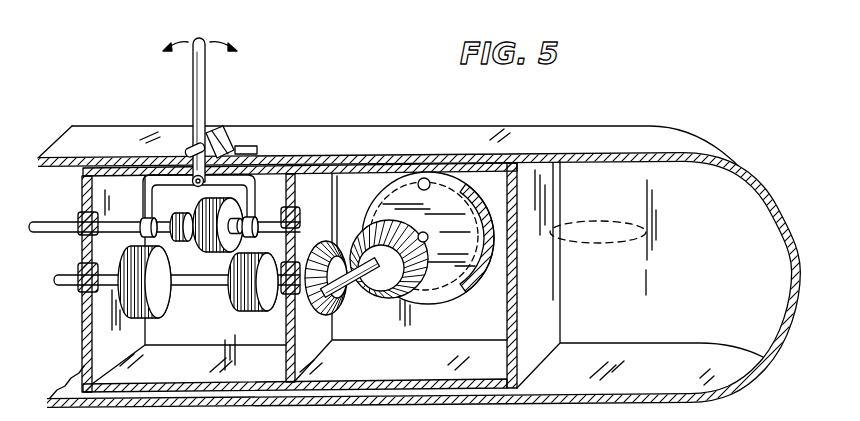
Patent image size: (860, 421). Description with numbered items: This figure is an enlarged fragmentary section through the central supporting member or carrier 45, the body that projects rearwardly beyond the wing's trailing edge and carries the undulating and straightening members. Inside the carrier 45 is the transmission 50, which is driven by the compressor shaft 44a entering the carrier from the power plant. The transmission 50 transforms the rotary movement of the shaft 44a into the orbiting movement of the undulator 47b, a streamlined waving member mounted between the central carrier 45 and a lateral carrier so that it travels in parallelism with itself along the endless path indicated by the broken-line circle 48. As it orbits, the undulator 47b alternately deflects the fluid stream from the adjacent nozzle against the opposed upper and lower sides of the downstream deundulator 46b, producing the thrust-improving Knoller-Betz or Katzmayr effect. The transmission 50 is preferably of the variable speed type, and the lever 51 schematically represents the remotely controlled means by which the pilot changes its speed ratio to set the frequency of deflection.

The compressor shaft 44a is at (70, 207).
The central supporting member or carrier 45 is at (623, 123).
The deundulator 46b is at (590, 246).
The undulator 47b is at (488, 159).
The circle 48 is at (487, 283).
The transmission 50 is at (296, 189).
The lever 51 is at (193, 84).